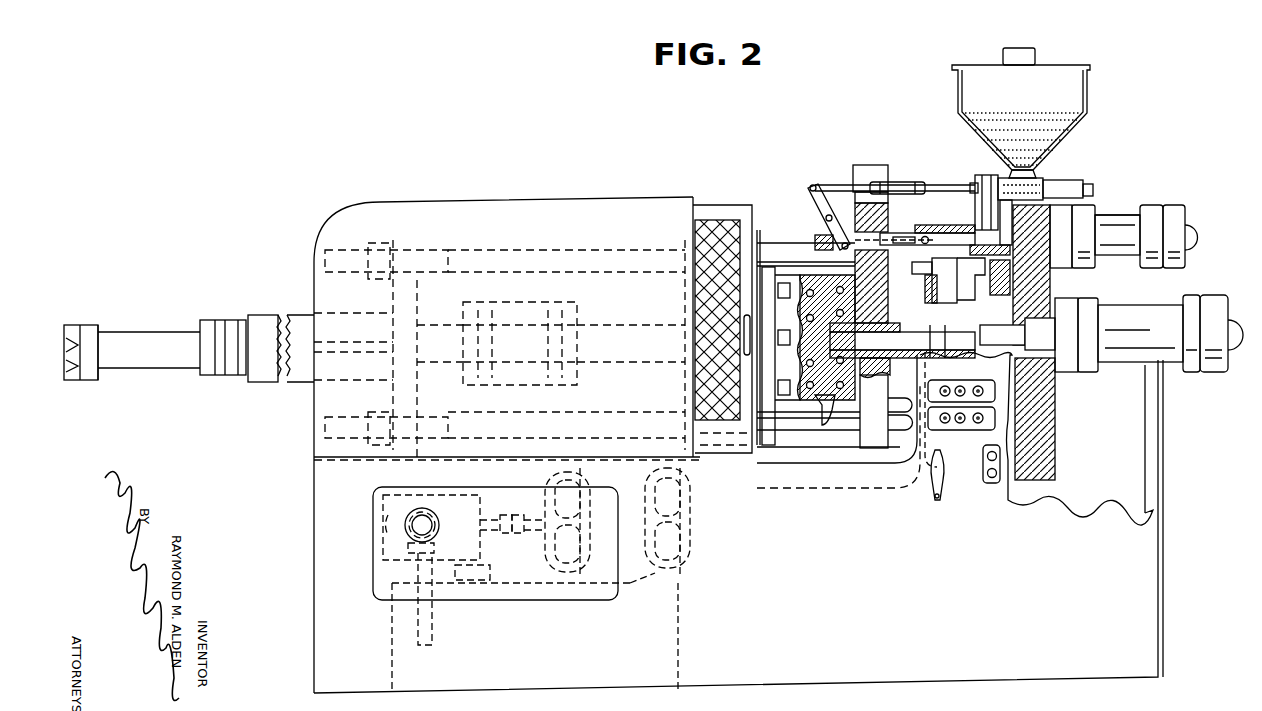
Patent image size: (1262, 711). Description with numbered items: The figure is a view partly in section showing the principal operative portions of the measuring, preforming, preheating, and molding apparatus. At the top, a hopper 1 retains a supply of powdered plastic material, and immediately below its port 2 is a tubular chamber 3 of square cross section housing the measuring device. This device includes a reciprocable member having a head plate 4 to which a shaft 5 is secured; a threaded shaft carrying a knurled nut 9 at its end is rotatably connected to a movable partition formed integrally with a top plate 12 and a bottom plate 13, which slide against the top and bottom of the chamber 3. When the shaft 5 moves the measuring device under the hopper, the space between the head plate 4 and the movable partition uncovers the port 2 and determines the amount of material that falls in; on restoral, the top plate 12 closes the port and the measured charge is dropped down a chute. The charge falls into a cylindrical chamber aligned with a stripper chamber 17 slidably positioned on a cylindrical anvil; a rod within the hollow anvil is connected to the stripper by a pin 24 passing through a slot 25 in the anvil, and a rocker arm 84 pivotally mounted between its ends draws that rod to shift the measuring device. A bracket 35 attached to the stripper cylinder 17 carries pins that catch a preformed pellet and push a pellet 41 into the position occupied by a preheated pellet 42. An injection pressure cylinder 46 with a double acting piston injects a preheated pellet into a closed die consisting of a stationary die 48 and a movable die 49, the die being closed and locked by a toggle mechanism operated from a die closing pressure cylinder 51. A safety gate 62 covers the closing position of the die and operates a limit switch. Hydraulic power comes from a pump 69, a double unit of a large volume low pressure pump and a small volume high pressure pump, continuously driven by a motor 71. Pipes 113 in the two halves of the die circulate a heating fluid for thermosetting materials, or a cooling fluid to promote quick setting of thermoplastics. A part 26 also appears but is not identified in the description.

The hopper 1 is at (1072, 92).
The port 2 is at (1040, 170).
The tubular chamber 3 is at (986, 191).
The head plate 4 is at (972, 182).
The shaft 5 is at (930, 184).
The knurled nut 9 is at (1090, 186).
The top plate 12 is at (1060, 182).
The bottom plate 13 is at (1117, 208).
The stripper chamber 17 is at (943, 226).
The pin 24 is at (925, 236).
The slot 25 is at (903, 237).
The hydraulic cylinder 26 is at (1125, 220).
The bracket 35 is at (983, 288).
The pellet 41 is at (942, 285).
The preheated pellet 42 is at (920, 292).
The injection pressure cylinder 46 is at (1147, 323).
The stationary die 48 is at (852, 438).
The movable die 49 is at (838, 373).
The die closing pressure cylinder 51 is at (163, 342).
The safety gate 62 is at (740, 205).
The pump 69 is at (395, 548).
The motor 71 is at (665, 572).
The rocker arm 84 is at (815, 238).
The pipes 113 is at (833, 405).